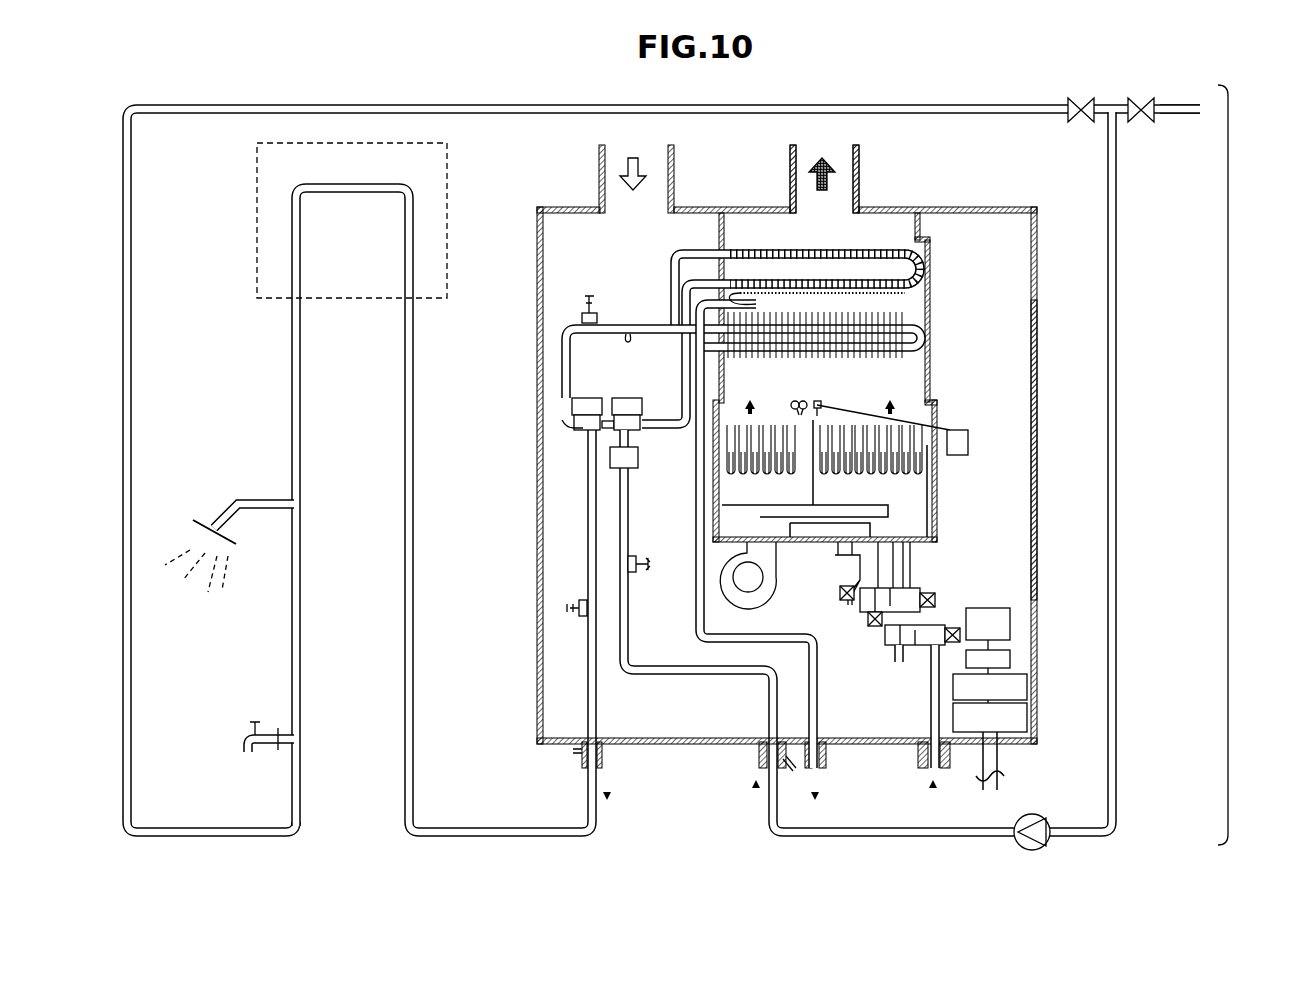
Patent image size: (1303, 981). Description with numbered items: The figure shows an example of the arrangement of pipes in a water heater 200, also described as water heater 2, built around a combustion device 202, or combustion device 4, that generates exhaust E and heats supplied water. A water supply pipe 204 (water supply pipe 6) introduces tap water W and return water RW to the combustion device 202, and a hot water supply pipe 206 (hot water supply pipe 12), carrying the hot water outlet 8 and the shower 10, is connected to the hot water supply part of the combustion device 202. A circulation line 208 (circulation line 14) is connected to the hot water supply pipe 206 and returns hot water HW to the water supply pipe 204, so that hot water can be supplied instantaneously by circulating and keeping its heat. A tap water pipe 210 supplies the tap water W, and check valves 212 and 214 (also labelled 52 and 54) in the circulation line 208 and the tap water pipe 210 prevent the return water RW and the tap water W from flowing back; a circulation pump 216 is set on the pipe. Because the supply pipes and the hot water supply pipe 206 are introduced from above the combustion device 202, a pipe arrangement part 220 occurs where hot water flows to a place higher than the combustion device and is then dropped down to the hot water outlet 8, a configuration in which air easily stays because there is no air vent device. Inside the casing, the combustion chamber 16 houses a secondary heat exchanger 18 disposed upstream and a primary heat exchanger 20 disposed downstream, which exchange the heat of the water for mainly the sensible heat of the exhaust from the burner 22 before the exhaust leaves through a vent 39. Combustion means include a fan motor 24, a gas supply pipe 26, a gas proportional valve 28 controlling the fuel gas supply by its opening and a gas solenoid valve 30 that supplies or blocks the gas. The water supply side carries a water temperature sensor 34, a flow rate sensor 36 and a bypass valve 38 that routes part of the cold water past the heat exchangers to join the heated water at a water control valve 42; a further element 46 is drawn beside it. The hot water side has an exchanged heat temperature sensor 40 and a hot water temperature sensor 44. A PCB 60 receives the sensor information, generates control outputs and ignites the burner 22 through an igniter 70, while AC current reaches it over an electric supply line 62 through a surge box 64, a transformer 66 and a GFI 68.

The water heater 2 is at (1223, 465).
The combustion device 4 is at (1037, 470).
The water supply pipe 6 is at (1116, 305).
The hot water outlet 8 is at (246, 738).
The shower 10 is at (200, 520).
The hot water supply pipe 12 is at (476, 832).
The circulation line 14 is at (178, 107).
The combustion chamber 16 is at (930, 314).
The secondary heat exchanger 18 is at (918, 256).
The primary heat exchanger 20 is at (918, 347).
The burner 22 is at (937, 466).
The fan motor 24 is at (752, 582).
The gas supply pipe 26 is at (930, 712).
The gas proportional valve 28 is at (898, 660).
The gas solenoid valve 30 is at (930, 598).
The water temperature sensor 34 is at (644, 575).
The flow rate sensor 36 is at (638, 458).
The bypass valve 38 is at (632, 398).
The vent 39 is at (859, 178).
The exchanged heat temperature sensor 40 is at (592, 311).
The water control valve 42 is at (576, 440).
The hot water temperature sensor 44 is at (576, 617).
The mixing valve 46 is at (607, 421).
The first valve 52 is at (1080, 100).
The second valve 54 is at (1140, 100).
The PCB 60 is at (988, 608).
The electric supply line 62 is at (1004, 774).
The surge box 64 is at (1027, 716).
The transformer 66 is at (1027, 688).
The GFI 68 is at (1012, 658).
The igniter 70 is at (968, 445).
The water heater 200 is at (1248, 465).
The combustion device 202 is at (1104, 450).
The water supply pipe 204 is at (901, 472).
The hot water supply pipe 206 is at (444, 510).
The circulation line 208 is at (663, 447).
The tap water pipe 210 is at (1179, 149).
The check valve 212 is at (1081, 79).
The check valve 214 is at (1141, 79).
The circulation pump 216 is at (1044, 820).
The pipe arrangement part 220 is at (450, 162).